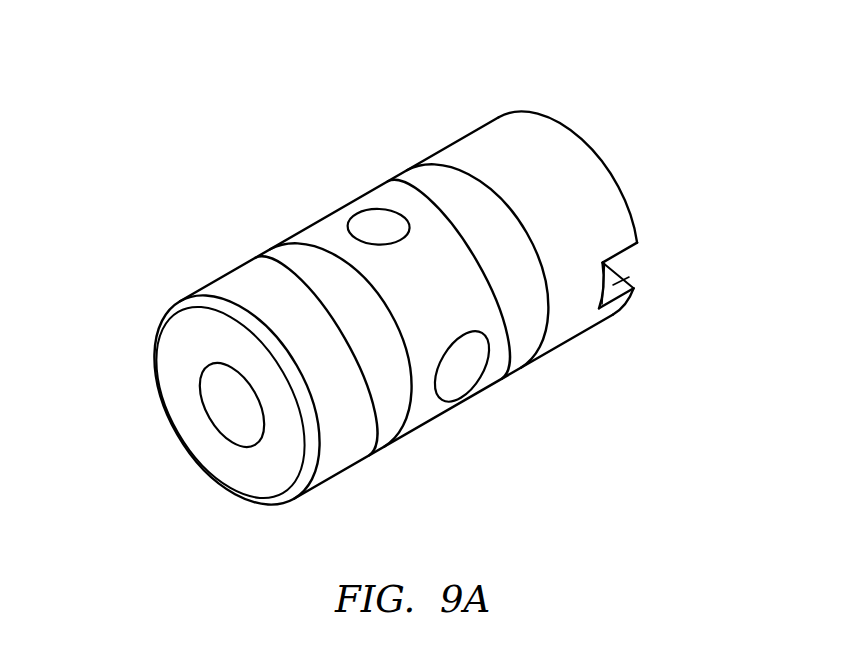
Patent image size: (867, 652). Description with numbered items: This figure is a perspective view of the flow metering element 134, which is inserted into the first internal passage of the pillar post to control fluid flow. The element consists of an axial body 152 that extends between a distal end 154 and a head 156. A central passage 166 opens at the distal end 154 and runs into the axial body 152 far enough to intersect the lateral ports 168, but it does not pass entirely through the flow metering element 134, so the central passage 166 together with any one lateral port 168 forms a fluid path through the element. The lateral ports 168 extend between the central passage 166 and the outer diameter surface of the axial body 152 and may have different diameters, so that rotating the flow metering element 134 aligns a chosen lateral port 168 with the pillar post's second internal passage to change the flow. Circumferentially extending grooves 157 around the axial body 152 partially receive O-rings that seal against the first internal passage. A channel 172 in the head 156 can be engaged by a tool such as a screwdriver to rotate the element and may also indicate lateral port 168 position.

The flow metering element 134 is at (578, 114).
The axial body 152 is at (420, 433).
The distal end 154 is at (178, 397).
The head 156 is at (608, 170).
The circumferentially extending groove 157 is at (425, 180).
The central passage 166 is at (230, 425).
The lateral ports 168 is at (364, 220).
The channel 172 is at (633, 275).